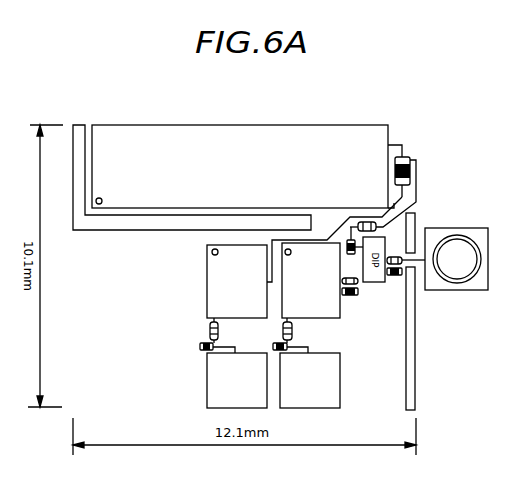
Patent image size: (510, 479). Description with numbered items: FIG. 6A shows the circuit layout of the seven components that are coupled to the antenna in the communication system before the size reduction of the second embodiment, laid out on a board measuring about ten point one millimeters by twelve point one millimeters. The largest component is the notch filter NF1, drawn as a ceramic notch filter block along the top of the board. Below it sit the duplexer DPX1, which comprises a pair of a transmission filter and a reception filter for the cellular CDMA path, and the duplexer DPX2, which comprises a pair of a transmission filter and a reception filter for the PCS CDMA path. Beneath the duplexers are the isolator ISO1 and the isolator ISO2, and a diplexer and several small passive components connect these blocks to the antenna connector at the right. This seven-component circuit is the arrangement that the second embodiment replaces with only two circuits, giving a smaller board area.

The notch filter NF1 is at (244, 167).
The duplexer DPX1 is at (208, 299).
The duplexer DPX2 is at (326, 298).
The isolator ISO1 is at (210, 380).
The isolator ISO2 is at (328, 380).